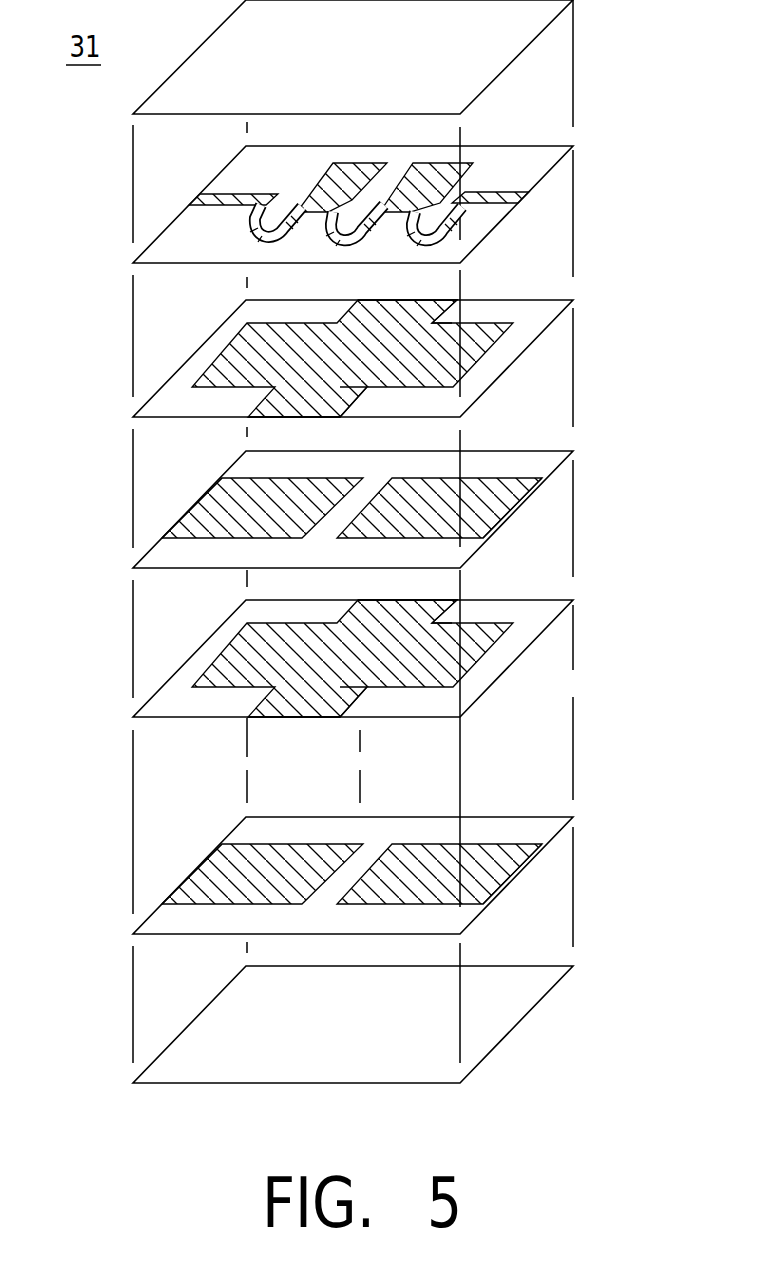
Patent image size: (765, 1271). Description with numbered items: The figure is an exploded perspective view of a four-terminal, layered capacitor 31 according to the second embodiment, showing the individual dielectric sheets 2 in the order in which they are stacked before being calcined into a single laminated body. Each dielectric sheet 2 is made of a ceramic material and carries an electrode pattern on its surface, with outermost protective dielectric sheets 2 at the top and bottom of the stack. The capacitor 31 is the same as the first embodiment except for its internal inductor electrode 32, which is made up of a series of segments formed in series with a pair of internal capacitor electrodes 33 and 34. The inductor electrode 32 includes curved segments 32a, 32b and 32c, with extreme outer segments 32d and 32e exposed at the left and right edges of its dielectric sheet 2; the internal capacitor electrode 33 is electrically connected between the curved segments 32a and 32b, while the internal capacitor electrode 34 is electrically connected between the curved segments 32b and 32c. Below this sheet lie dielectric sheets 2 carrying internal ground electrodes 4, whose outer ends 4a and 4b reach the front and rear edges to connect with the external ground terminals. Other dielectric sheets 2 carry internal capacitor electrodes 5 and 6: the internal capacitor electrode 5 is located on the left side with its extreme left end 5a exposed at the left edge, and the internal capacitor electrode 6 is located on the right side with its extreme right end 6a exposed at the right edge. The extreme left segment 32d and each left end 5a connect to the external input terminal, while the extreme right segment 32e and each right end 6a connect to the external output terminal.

The dielectric sheet 2 is at (518, 30).
The internal ground electrode 4 is at (237, 354).
The outer end of internal ground electrode 4a is at (287, 412).
The outer end of internal ground electrode 4b is at (397, 303).
The internal capacitor electrode 5 is at (242, 520).
The extreme left end of internal capacitor electrode 5a is at (205, 505).
The internal capacitor electrode 6 is at (390, 515).
The extreme right end of internal capacitor electrode 6a is at (494, 511).
The four-terminal, layered capacitor 31 is at (85, 46).
The internal inductor electrode 32 is at (284, 86).
The curved segment 32a is at (284, 213).
The curved segment 32b is at (336, 238).
The curved segment 32c is at (427, 233).
The extreme left segment 32d is at (224, 198).
The extreme right segment 32e is at (483, 190).
The internal capacitor electrode 33 is at (350, 172).
The internal capacitor electrode 34 is at (418, 170).